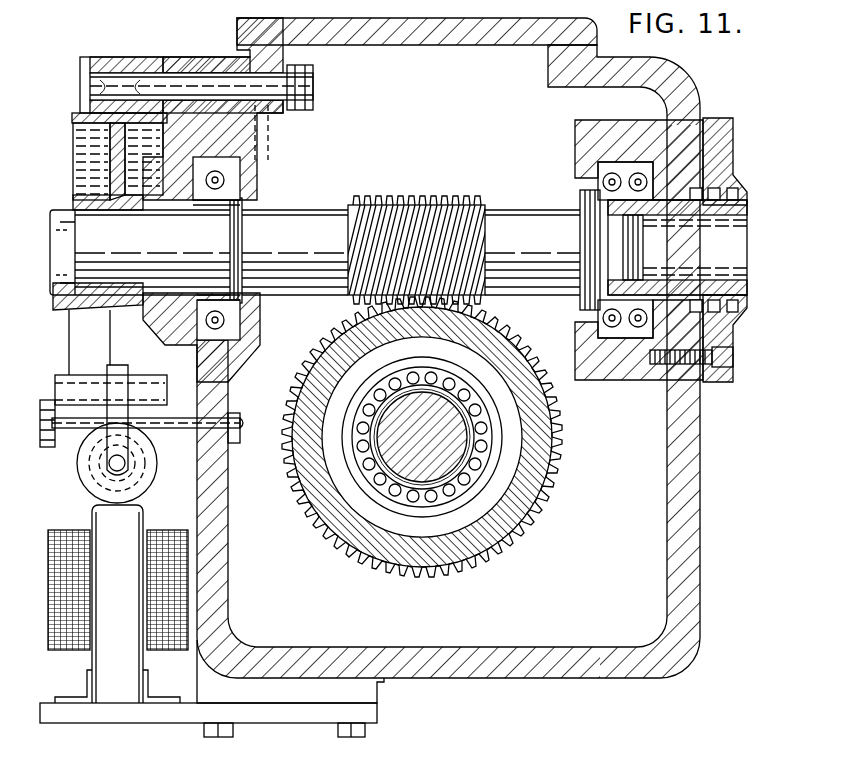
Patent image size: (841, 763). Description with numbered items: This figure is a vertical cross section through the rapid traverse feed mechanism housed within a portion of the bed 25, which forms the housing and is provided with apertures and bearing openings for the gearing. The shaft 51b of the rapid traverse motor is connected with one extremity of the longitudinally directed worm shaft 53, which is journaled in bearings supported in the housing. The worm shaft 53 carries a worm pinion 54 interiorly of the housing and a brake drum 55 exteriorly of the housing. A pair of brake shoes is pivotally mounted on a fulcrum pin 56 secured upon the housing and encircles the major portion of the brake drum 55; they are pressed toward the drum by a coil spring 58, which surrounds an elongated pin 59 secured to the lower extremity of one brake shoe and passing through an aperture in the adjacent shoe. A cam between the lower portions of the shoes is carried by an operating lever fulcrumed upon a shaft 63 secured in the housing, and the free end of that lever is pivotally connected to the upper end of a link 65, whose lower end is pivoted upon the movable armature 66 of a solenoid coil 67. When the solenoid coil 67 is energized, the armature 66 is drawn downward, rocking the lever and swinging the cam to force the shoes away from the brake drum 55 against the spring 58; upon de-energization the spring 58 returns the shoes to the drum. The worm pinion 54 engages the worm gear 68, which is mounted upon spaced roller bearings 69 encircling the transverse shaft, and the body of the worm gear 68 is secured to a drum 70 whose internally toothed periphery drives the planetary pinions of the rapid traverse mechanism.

The bed 25 is at (469, 360).
The shaft of rapid traverse motor 51b is at (677, 247).
The worm shaft 53 is at (325, 250).
The worm pinion 54 is at (437, 204).
The brake drum 55 is at (120, 163).
The fulcrum pin 56 is at (180, 77).
The coil spring 58 is at (152, 473).
The elongated pin 59 is at (84, 466).
The shaft 63 is at (156, 414).
The link 65 is at (117, 378).
The armature 66 is at (92, 503).
The solenoid coil 67 is at (174, 524).
The worm gear 68 is at (557, 446).
The roller bearings 69 is at (443, 470).
The drum 70 is at (468, 488).